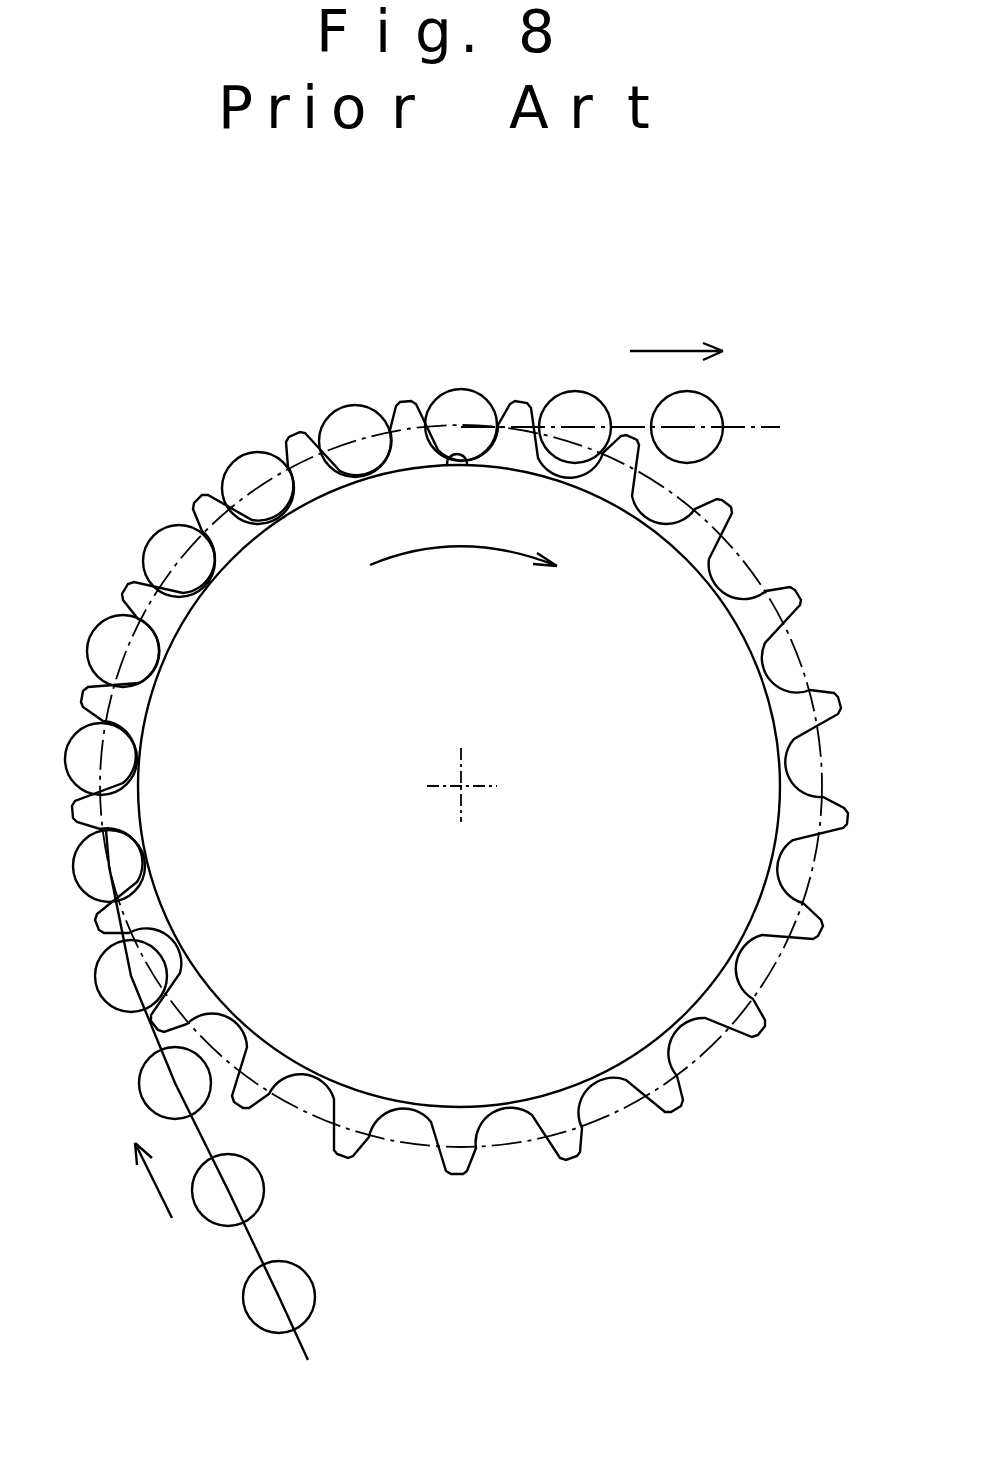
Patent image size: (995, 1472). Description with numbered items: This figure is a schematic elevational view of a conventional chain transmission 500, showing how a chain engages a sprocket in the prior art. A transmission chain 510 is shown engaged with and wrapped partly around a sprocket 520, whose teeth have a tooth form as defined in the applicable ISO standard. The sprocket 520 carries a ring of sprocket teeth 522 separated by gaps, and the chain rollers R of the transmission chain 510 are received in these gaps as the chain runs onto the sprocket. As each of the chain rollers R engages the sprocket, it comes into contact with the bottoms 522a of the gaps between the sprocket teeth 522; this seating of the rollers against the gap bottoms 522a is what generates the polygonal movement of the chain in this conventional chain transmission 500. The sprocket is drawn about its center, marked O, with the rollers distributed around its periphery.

The chain transmission 500 is at (422, 802).
The transmission chain 510 is at (345, 1342).
The sprocket 520 is at (460, 787).
The sprocket teeth 522 is at (394, 831).
The bottoms of the gaps between sprocket teeth 522a is at (467, 464).
The chain roller R is at (461, 390).
The sprocket center O is at (462, 787).